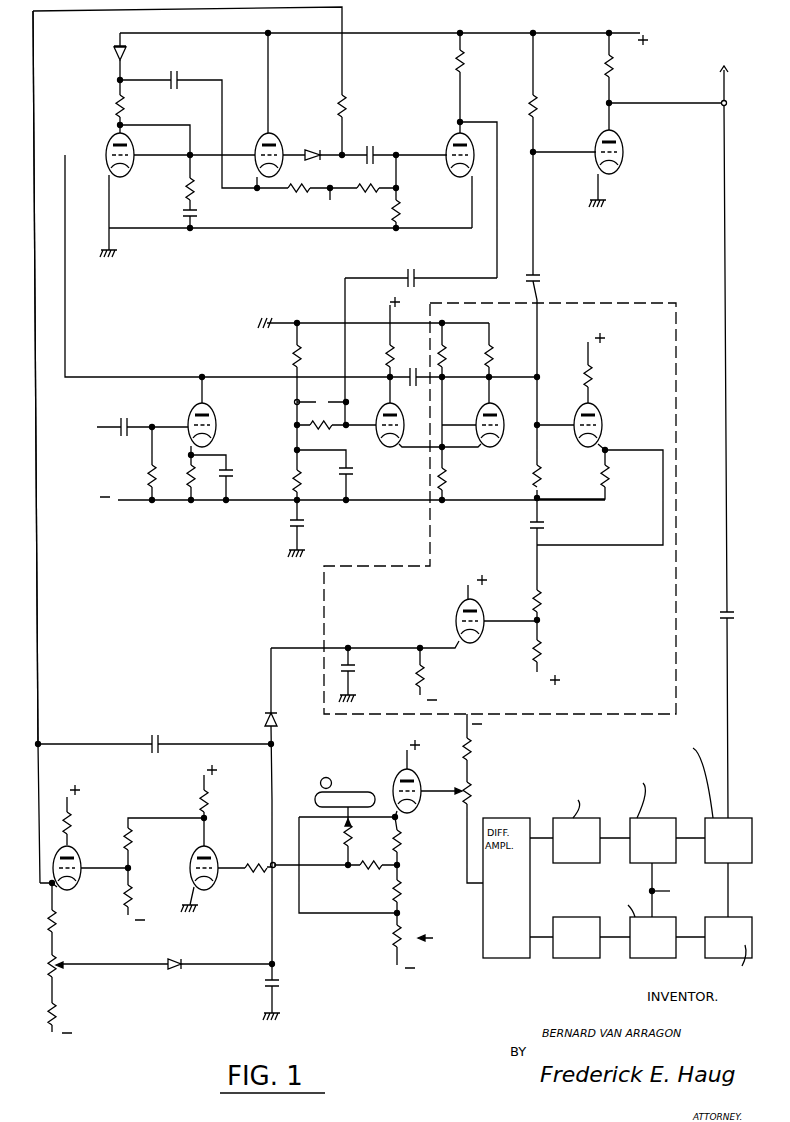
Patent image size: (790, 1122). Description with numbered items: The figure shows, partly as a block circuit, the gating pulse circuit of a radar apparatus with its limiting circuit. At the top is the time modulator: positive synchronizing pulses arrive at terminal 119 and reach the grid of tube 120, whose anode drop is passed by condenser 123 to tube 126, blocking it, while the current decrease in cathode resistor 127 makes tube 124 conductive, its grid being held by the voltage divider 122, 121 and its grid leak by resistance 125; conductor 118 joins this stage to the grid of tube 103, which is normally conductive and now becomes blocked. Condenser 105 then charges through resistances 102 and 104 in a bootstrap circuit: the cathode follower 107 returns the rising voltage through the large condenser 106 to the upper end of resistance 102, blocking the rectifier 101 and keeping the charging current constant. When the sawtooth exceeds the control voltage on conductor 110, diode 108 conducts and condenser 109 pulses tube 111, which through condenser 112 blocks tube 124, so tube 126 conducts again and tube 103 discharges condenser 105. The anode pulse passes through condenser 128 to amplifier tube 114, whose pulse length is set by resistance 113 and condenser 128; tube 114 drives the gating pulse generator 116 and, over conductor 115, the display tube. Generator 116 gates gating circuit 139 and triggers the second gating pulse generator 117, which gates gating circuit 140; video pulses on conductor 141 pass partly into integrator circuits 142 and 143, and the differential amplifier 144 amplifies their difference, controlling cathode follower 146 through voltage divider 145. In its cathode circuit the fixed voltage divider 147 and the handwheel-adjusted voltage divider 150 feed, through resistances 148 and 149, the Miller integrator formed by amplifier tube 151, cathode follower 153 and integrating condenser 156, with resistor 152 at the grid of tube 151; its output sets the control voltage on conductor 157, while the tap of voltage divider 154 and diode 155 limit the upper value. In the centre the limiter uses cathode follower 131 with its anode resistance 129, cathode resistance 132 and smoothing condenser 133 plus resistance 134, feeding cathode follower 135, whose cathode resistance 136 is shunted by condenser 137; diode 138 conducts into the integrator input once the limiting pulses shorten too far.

The rectifier 101 is at (105, 55).
The resistance 102 is at (103, 108).
The tube 103 is at (137, 155).
The resistance 104 is at (174, 191).
The condenser 105 is at (210, 217).
The condenser 106 is at (192, 73).
The cathode follower 107 is at (260, 148).
The diode 108 is at (317, 146).
The condenser 109 is at (374, 146).
The conductor 110 is at (358, 84).
The tube 111 is at (452, 163).
The condenser 112 is at (421, 272).
The resistance 113 is at (552, 104).
The amplifier tube 114 is at (626, 154).
The conductor 115 is at (732, 432).
The gating pulse generator 116 is at (738, 818).
The second gating pulse generator 117 is at (737, 917).
The conductor 118 is at (237, 266).
The terminal 119 is at (95, 428).
The tube 120 is at (218, 412).
The voltage divider resistance 121 is at (280, 357).
The voltage divider resistance 122 is at (280, 481).
The condenser 123 is at (408, 371).
The tube 124 is at (387, 436).
The resistance 125 is at (448, 348).
The tube 126 is at (499, 436).
The cathode resistor 127 is at (461, 479).
The condenser 128 is at (554, 276).
The resistor 129 is at (555, 478).
The cathode follower 131 is at (606, 422).
The resistor 132 is at (623, 478).
The capacitor 133 is at (517, 527).
The potentiometer 134 is at (556, 626).
The cathode follower 135 is at (479, 630).
The cathode resistance 136 is at (436, 678).
The condenser 137 is at (366, 672).
The diode 138 is at (288, 727).
The gating circuit 139 is at (655, 818).
The gating circuit 140 is at (650, 952).
The conductor 141 is at (678, 894).
The integrator circuit 142 is at (588, 805).
The integrator circuit 143 is at (590, 952).
The differential amplifier 144 is at (447, 937).
The voltage divider 145 is at (479, 771).
The cathode follower 146 is at (419, 799).
The voltage divider 147 is at (413, 853).
The resistance 148 is at (361, 878).
The resistance 149 is at (331, 838).
The adjustable voltage divider 150 is at (345, 788).
The amplifier tube 151 is at (219, 873).
The resistor 152 is at (143, 867).
The cathode follower 153 is at (80, 875).
The voltage divider 154 is at (72, 962).
The diode 155 is at (180, 976).
The integrating condenser 156 is at (158, 735).
The conductor 157 is at (53, 377).